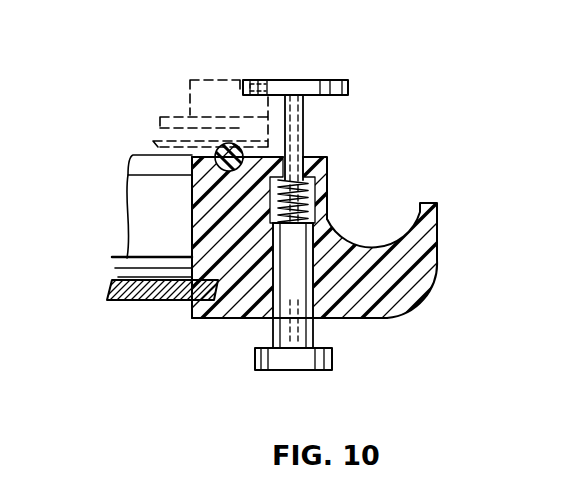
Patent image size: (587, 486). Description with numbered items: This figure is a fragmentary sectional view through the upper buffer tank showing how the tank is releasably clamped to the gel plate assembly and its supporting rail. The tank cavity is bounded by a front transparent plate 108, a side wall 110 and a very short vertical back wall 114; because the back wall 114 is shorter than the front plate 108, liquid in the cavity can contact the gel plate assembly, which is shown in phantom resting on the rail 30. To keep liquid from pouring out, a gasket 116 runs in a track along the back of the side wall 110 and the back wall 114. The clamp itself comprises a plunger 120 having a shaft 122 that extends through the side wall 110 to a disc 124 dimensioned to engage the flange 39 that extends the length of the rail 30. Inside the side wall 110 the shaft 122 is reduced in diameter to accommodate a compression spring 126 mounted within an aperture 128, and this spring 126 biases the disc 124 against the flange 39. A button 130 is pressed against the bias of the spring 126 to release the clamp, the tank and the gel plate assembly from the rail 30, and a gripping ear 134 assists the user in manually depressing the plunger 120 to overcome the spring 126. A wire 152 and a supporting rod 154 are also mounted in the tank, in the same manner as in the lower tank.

The rail 30 is at (186, 97).
The flange 39 is at (255, 108).
The front transparent plate 108 is at (120, 302).
The side wall 110 is at (233, 307).
The back wall 114 is at (130, 172).
The gasket 116 is at (163, 156).
The plunger 120 is at (305, 328).
The shaft 122 is at (303, 140).
The disc 124 is at (349, 86).
The compression spring 126 is at (314, 192).
The aperture 128 is at (316, 222).
The button 130 is at (287, 360).
The gripping ear 134 is at (405, 288).
The wire 152 is at (158, 257).
The supporting rod 154 is at (140, 268).